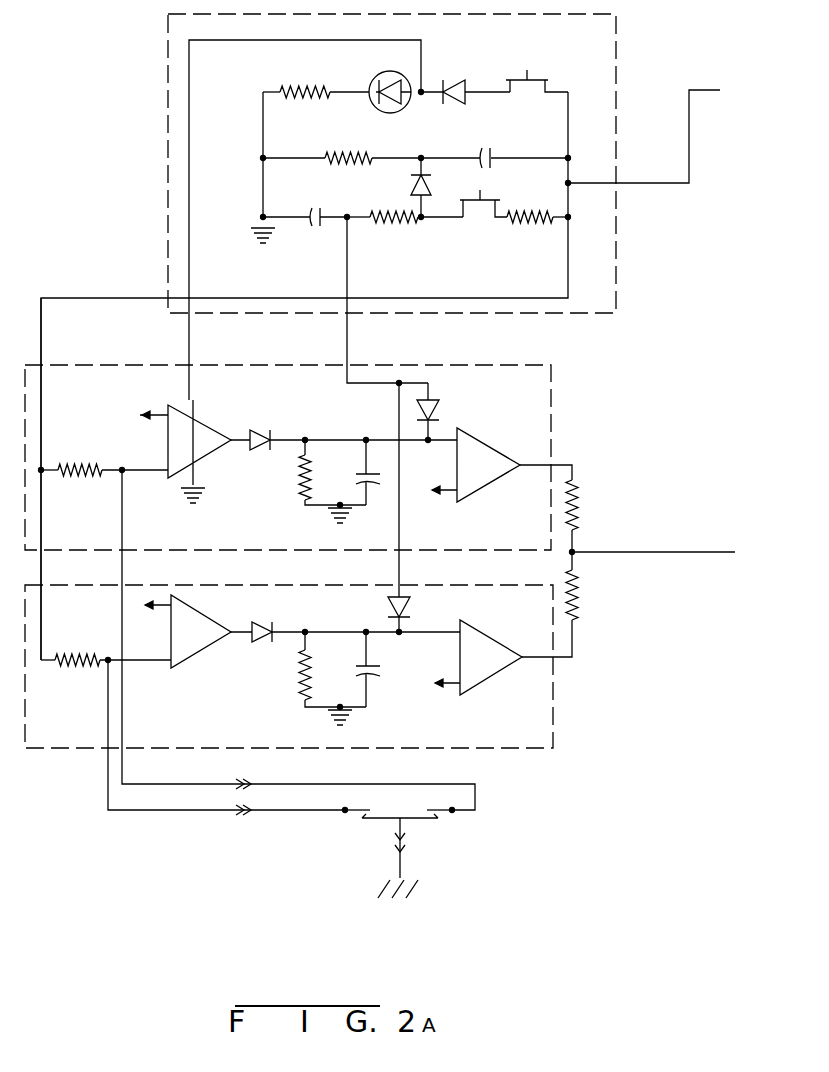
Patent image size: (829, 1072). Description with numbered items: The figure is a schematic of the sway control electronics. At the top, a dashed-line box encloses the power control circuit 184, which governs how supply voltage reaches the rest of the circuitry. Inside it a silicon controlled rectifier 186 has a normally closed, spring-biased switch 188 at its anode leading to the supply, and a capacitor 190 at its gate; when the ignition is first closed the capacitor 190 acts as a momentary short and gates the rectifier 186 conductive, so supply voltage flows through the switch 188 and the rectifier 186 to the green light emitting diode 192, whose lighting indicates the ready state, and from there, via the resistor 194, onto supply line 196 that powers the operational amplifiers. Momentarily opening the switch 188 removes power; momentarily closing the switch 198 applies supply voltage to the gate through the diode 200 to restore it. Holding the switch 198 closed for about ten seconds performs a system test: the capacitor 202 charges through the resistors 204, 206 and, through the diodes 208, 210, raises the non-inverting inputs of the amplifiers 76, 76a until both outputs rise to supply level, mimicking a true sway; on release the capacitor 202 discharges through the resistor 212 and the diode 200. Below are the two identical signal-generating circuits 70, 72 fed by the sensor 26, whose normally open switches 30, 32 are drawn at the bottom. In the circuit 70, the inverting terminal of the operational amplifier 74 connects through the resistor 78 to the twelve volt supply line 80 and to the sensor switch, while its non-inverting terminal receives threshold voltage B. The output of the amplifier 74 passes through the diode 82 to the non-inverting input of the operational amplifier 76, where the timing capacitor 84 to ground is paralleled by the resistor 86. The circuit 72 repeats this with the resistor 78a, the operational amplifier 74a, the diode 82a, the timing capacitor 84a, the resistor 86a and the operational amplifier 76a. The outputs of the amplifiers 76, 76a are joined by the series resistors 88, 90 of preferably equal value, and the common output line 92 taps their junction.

The power control circuit 184 is at (690, 62).
The supply line 196 is at (272, 40).
The resistor 194 is at (306, 86).
The light emitting diode 192 is at (374, 108).
The silicon controlled rectifier 186 is at (447, 82).
The switch 188 is at (534, 73).
The capacitor 190 is at (484, 150).
The resistor 212 is at (332, 154).
The capacitor 202 is at (320, 184).
The diode 200 is at (412, 183).
The resistor 204 is at (394, 224).
The resistor 206 is at (526, 224).
The switch 198 is at (503, 200).
The signal-generating circuit 70 is at (553, 368).
The supply line 80 is at (43, 378).
The resistor 78 is at (82, 464).
The operational amplifier 74 is at (185, 404).
The diode 82 is at (262, 428).
The timing capacitor 84 is at (356, 480).
The resistor 86 is at (302, 486).
The diode 208 is at (443, 410).
The operational amplifier 76 is at (493, 440).
The resistor 88 is at (580, 512).
The common output line 92 is at (612, 552).
The resistor 90 is at (580, 596).
The signal-generating circuit 72 is at (555, 698).
The resistor 78a is at (82, 654).
The operational amplifier 74a is at (212, 612).
The diode 82a is at (265, 620).
The resistor 86a is at (300, 690).
The timing capacitor 84a is at (376, 670).
The diode 210 is at (408, 610).
The operational amplifier 76a is at (492, 632).
The switch 30 is at (354, 804).
The switch 32 is at (437, 806).
The sensor 26 is at (380, 828).